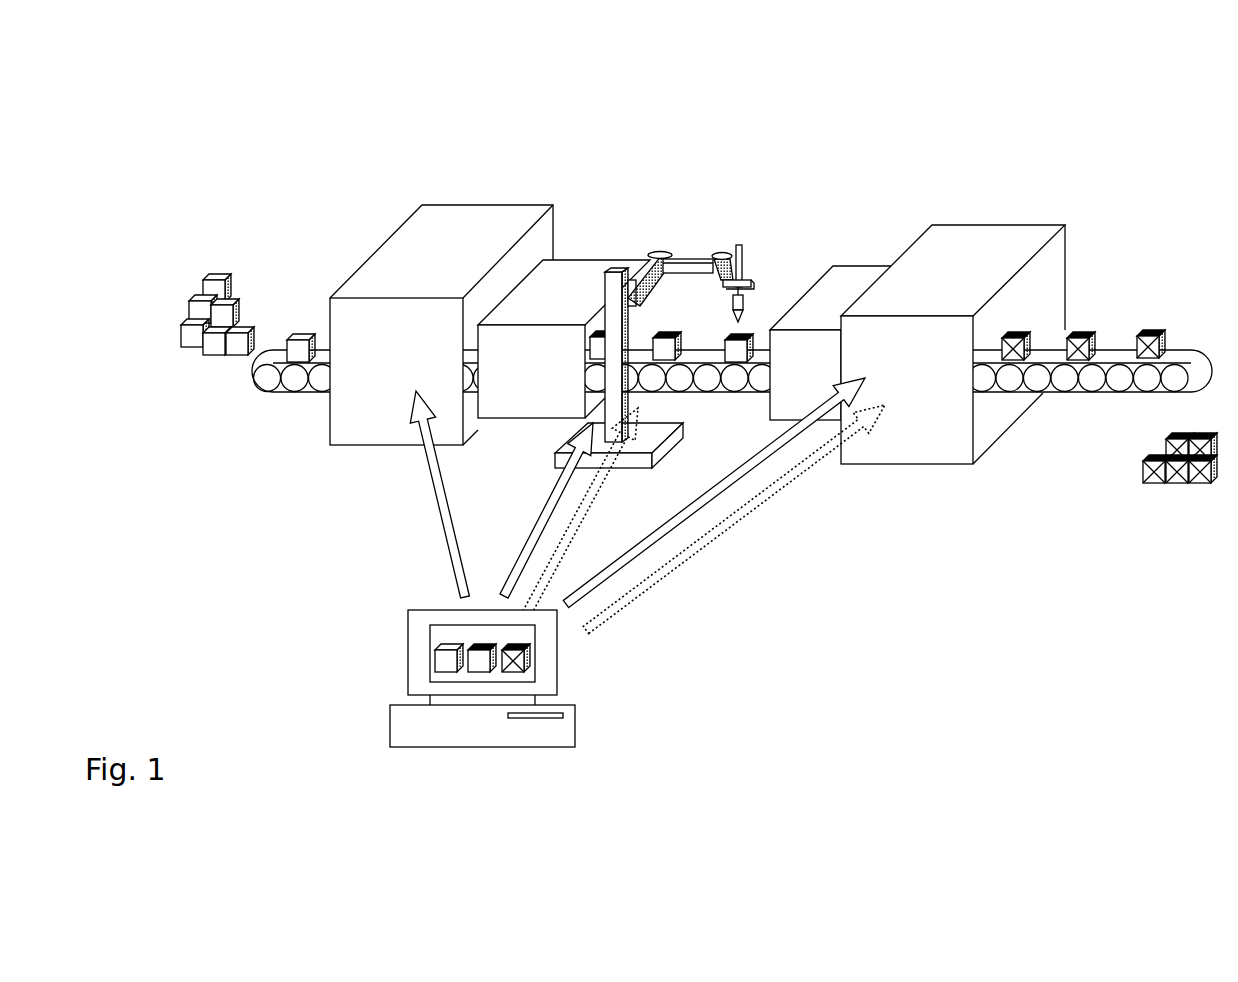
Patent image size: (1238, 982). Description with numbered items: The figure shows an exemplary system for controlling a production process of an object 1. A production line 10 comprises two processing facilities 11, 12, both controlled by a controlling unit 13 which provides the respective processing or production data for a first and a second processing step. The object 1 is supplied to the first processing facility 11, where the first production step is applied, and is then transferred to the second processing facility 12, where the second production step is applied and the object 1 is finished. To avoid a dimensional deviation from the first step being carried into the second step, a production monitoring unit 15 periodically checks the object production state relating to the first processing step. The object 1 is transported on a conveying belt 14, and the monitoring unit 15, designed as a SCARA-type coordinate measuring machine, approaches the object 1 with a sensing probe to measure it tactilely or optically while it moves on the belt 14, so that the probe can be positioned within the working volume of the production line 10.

The object 1 is at (699, 344).
The production line 10 is at (699, 414).
The first processing facility 11 is at (441, 301).
The second processing facility 12 is at (972, 312).
The controlling unit 13 is at (530, 678).
The conveying belt 14 is at (701, 385).
The production monitoring unit 15 is at (692, 262).